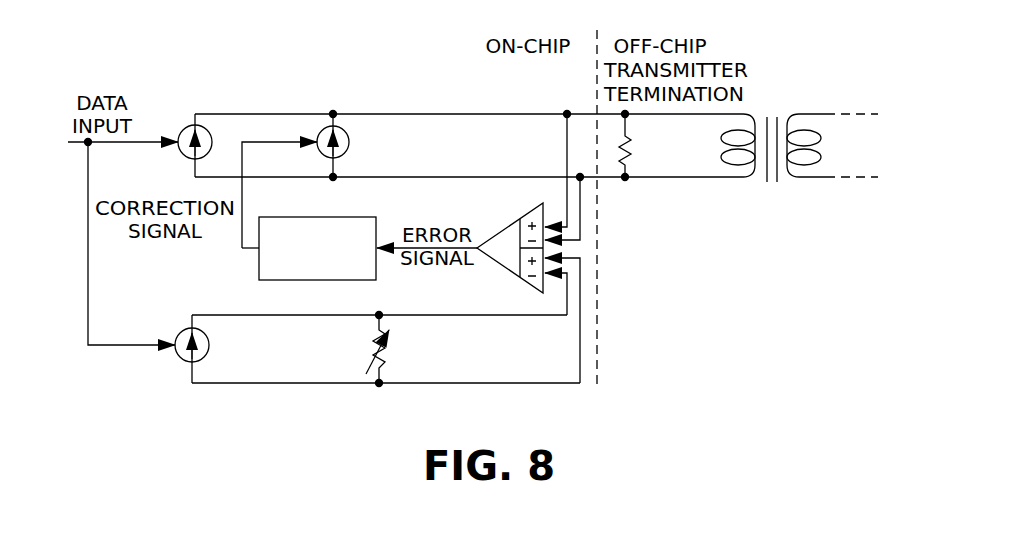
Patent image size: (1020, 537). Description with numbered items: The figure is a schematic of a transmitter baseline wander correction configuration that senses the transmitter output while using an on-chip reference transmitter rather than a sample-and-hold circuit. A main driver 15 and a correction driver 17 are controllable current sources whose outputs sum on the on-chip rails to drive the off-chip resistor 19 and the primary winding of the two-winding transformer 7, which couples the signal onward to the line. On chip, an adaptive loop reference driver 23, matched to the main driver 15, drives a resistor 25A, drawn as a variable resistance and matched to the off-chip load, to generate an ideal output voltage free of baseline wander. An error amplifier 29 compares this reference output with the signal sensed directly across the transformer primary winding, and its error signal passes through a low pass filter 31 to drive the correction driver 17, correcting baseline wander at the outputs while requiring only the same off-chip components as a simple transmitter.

The main driver 15 is at (183, 156).
The correction driver 17 is at (323, 131).
The low pass filter 31 is at (259, 270).
The error amplifier 29 is at (514, 223).
The reference driver 23 is at (181, 358).
The resistor 25A is at (375, 345).
The off-chip resistor 19 is at (630, 138).
The transformer 7 is at (771, 198).